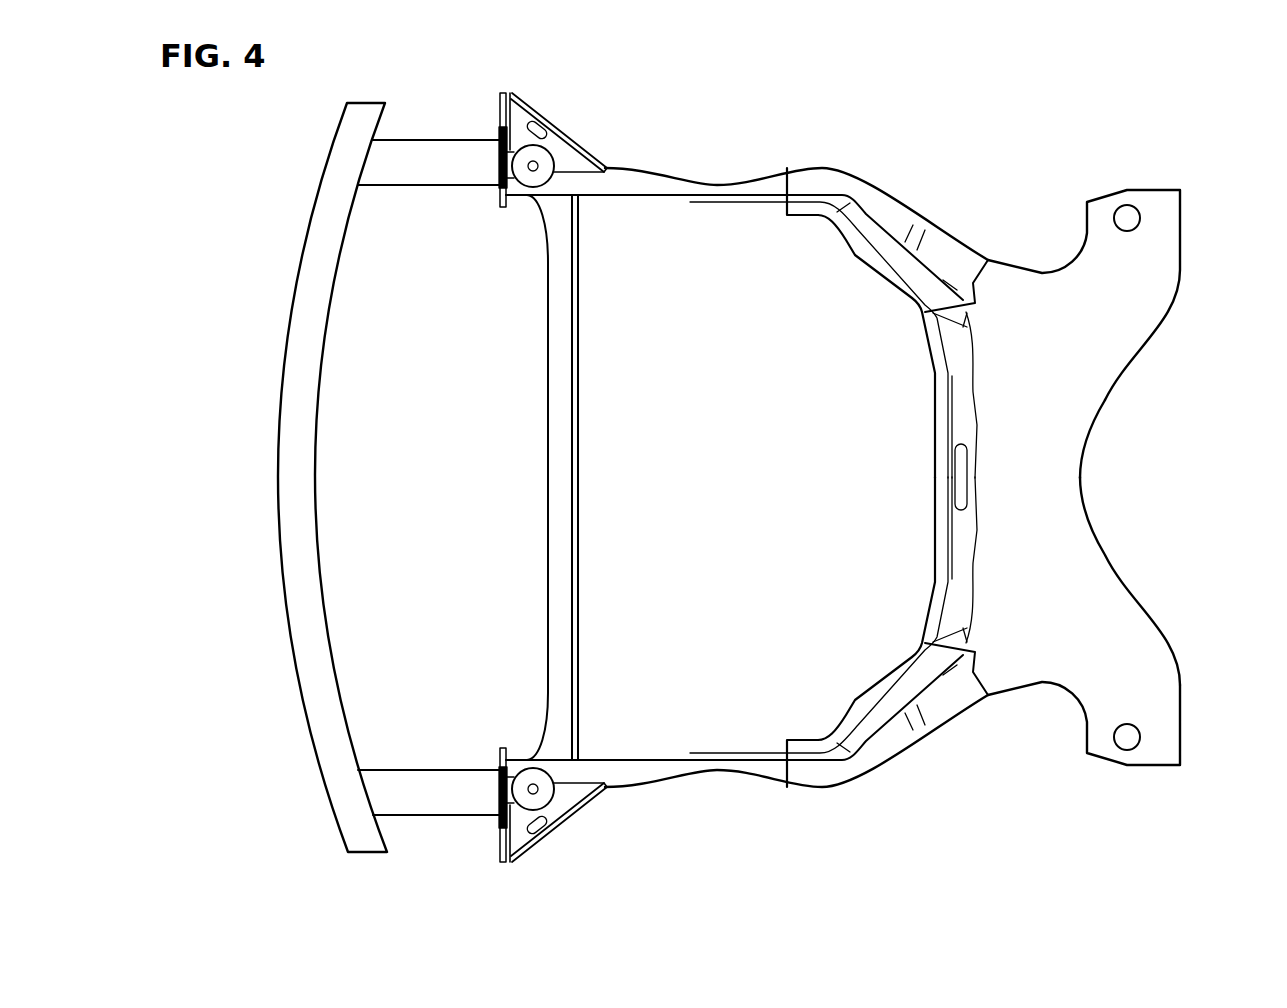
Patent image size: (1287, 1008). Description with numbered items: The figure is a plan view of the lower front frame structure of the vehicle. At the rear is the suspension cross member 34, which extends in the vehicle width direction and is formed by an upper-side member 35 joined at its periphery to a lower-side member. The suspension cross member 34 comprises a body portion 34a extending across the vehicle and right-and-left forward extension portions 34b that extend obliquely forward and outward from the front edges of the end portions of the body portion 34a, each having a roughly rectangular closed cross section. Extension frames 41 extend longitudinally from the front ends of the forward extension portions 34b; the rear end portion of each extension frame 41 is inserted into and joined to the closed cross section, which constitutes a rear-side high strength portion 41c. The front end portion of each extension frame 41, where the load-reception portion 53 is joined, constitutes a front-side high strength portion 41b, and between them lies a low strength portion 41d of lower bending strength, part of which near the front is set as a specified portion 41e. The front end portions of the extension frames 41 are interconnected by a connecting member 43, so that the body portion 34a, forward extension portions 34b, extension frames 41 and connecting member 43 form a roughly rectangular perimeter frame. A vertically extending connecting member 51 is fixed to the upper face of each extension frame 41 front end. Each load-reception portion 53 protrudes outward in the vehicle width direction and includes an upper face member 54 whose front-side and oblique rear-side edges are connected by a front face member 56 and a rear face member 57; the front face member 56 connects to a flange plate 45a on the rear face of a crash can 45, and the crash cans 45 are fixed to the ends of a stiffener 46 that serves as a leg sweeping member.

The suspension cross member 34 is at (1148, 369).
The body portion 34a is at (1063, 442).
The forward extension portion 34b is at (885, 210).
The upper-side member 35 is at (1117, 597).
The extension frame 41 is at (724, 172).
The front-side high strength portion 41b is at (595, 186).
The rear-side high strength portion 41c is at (802, 162).
The low strength portion 41d is at (698, 197).
The specified portion 41e is at (625, 203).
The connecting member 43 is at (552, 452).
The crash can 45 is at (422, 175).
The flange plate 45a is at (500, 200).
The stiffener 46 is at (285, 450).
The connecting member 51 is at (545, 157).
The load-reception portion 53 is at (542, 89).
The upper face member 54 is at (553, 140).
The front face member 56 is at (500, 111).
The rear face member 57 is at (582, 138).